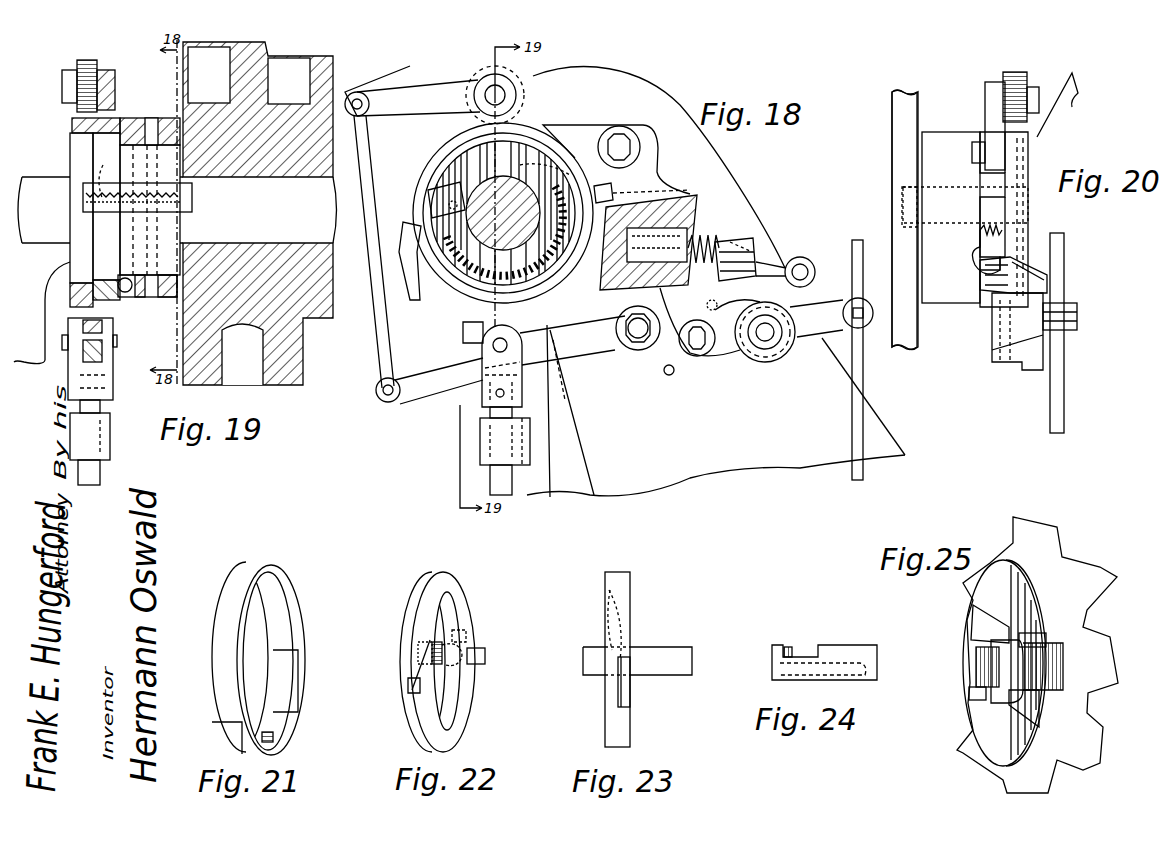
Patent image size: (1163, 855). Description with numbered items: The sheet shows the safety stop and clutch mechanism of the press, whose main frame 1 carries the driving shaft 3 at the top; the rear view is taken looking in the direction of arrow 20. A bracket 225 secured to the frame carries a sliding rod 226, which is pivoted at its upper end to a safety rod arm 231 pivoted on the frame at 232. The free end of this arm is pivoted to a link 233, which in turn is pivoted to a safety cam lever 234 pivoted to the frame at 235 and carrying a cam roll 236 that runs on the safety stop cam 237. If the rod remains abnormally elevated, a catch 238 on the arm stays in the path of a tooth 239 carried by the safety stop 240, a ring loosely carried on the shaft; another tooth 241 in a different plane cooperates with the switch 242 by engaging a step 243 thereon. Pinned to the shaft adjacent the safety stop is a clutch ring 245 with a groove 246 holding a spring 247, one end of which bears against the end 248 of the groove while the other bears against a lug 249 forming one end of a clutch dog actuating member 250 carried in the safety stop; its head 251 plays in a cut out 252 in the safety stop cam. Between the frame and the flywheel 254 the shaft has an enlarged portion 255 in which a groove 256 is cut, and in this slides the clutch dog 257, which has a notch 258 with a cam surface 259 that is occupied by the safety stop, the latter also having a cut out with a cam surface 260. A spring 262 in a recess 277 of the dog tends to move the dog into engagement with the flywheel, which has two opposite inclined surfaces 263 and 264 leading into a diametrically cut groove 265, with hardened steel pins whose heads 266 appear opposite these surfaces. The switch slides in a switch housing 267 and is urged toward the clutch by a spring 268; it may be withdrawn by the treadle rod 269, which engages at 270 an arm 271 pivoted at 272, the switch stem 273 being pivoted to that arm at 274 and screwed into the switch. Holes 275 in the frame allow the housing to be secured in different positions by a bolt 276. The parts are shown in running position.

In FIG. 19, the main frame 1 is at (65, 135).
In FIG. 18, the main frame 1 is at (697, 467).
In FIG. 20, the main frame 1 is at (1057, 105).
In FIG. 19, the driving shaft 3 is at (177, 208).
In FIG. 18, the driving shaft 3 is at (503, 213).
In FIG. 18, the arrow 20 is at (777, 193).
In FIG. 19, the bracket 225 is at (90, 440).
In FIG. 18, the bracket 225 is at (537, 438).
In FIG. 19, the rod 226 is at (88, 472).
In FIG. 18, the rod 226 is at (500, 480).
In FIG. 19, the safety rod arm 231 is at (100, 325).
In FIG. 18, the safety rod arm 231 is at (439, 377).
In FIG. 18, the pivot 232 is at (633, 337).
In FIG. 18, the link 233 is at (377, 297).
In FIG. 19, the safety cam lever 234 is at (108, 72).
In FIG. 18, the safety cam lever 234 is at (412, 91).
In FIG. 20, the safety cam lever 234 is at (990, 112).
In FIG. 18, the pivot 235 is at (621, 146).
In FIG. 20, the pivot 235 is at (972, 153).
In FIG. 19, the cam roll 236 is at (85, 62).
In FIG. 18, the cam roll 236 is at (485, 78).
In FIG. 20, the cam roll 236 is at (1012, 72).
In FIG. 19, the safety stop cam 237 is at (72, 126).
In FIG. 18, the safety stop cam 237 is at (570, 142).
In FIG. 21, the safety stop cam 237 is at (243, 583).
In FIG. 18, the catch 238 is at (463, 330).
In FIG. 18, the tooth 239 is at (612, 192).
In FIG. 22, the tooth 239 is at (462, 632).
In FIG. 19, the safety stop 240 is at (100, 135).
In FIG. 18, the safety stop 240 is at (440, 162).
In FIG. 20, the safety stop 240 is at (1004, 219).
In FIG. 22, the safety stop 240 is at (432, 583).
In FIG. 23, the safety stop 240 is at (620, 577).
In FIG. 18, the tooth 241 is at (412, 272).
In FIG. 22, the tooth 241 is at (410, 688).
In FIG. 23, the tooth 241 is at (630, 692).
In FIG. 18, the switch 242 is at (688, 230).
In FIG. 20, the switch 242 is at (980, 238).
In FIG. 18, the step 243 is at (622, 283).
In FIG. 19, the clutch ring 245 is at (128, 132).
In FIG. 18, the clutch ring 245 is at (492, 150).
In FIG. 20, the clutch ring 245 is at (965, 217).
In FIG. 19, the groove 246 is at (150, 250).
In FIG. 18, the groove 246 is at (484, 258).
In FIG. 19, the spring 247 is at (70, 308).
In FIG. 18, the spring 247 is at (534, 256).
In FIG. 18, the end of groove 248 is at (420, 205).
In FIG. 18, the lug 249 is at (651, 199).
In FIG. 22, the lug 249 is at (485, 656).
In FIG. 19, the clutch dog actuating member 250 is at (170, 150).
In FIG. 18, the clutch dog actuating member 250 is at (538, 161).
In FIG. 22, the clutch dog actuating member 250 is at (456, 665).
In FIG. 22, the head 251 is at (432, 657).
In FIG. 21, the cut out 252 is at (290, 670).
In FIG. 19, the flywheel 254 is at (262, 300).
In FIG. 18, the flywheel 254 is at (895, 135).
In FIG. 20, the flywheel 254 is at (905, 219).
In FIG. 25, the flywheel 254 is at (1037, 655).
In FIG. 19, the enlarged portion 255 is at (125, 240).
In FIG. 18, the enlarged portion 255 is at (460, 175).
In FIG. 19, the groove 256 is at (83, 205).
In FIG. 18, the groove 256 is at (443, 190).
In FIG. 19, the clutch dog 257 is at (192, 204).
In FIG. 18, the clutch dog 257 is at (446, 200).
In FIG. 23, the clutch dog 257 is at (637, 661).
In FIG. 24, the clutch dog 257 is at (825, 646).
In FIG. 19, the notch 258 is at (140, 207).
In FIG. 23, the notch 258 is at (630, 655).
In FIG. 24, the notch 258 is at (806, 656).
In FIG. 19, the cam surface 259 is at (100, 230).
In FIG. 23, the cam surface 259 is at (615, 610).
In FIG. 24, the cam surface 259 is at (786, 648).
In FIG. 23, the cam surface 260 is at (607, 612).
In FIG. 19, the spring 262 is at (185, 150).
In FIG. 18, the spring 262 is at (491, 158).
In FIG. 25, the inclined surface 263 is at (986, 628).
In FIG. 25, the inclined surface 264 is at (1031, 700).
In FIG. 25, the groove 265 is at (981, 657).
In FIG. 25, the pin heads 266 is at (1036, 635).
In FIG. 18, the switch housing 267 is at (696, 343).
In FIG. 20, the switch housing 267 is at (990, 210).
In FIG. 18, the spring 268 is at (725, 238).
In FIG. 18, the treadle rod 269 is at (852, 406).
In FIG. 20, the treadle rod 269 is at (1060, 380).
In FIG. 20, the pivotal engagement 270 is at (1035, 314).
In FIG. 20, the arm 271 is at (1010, 332).
In FIG. 18, the pivot 272 is at (770, 343).
In FIG. 18, the switch stem 273 is at (745, 268).
In FIG. 20, the switch stem 273 is at (1020, 258).
In FIG. 18, the pivot 274 is at (803, 272).
In FIG. 18, the holes 275 is at (665, 375).
In FIG. 18, the bolt 276 is at (725, 355).
In FIG. 24, the recess 277 is at (780, 680).